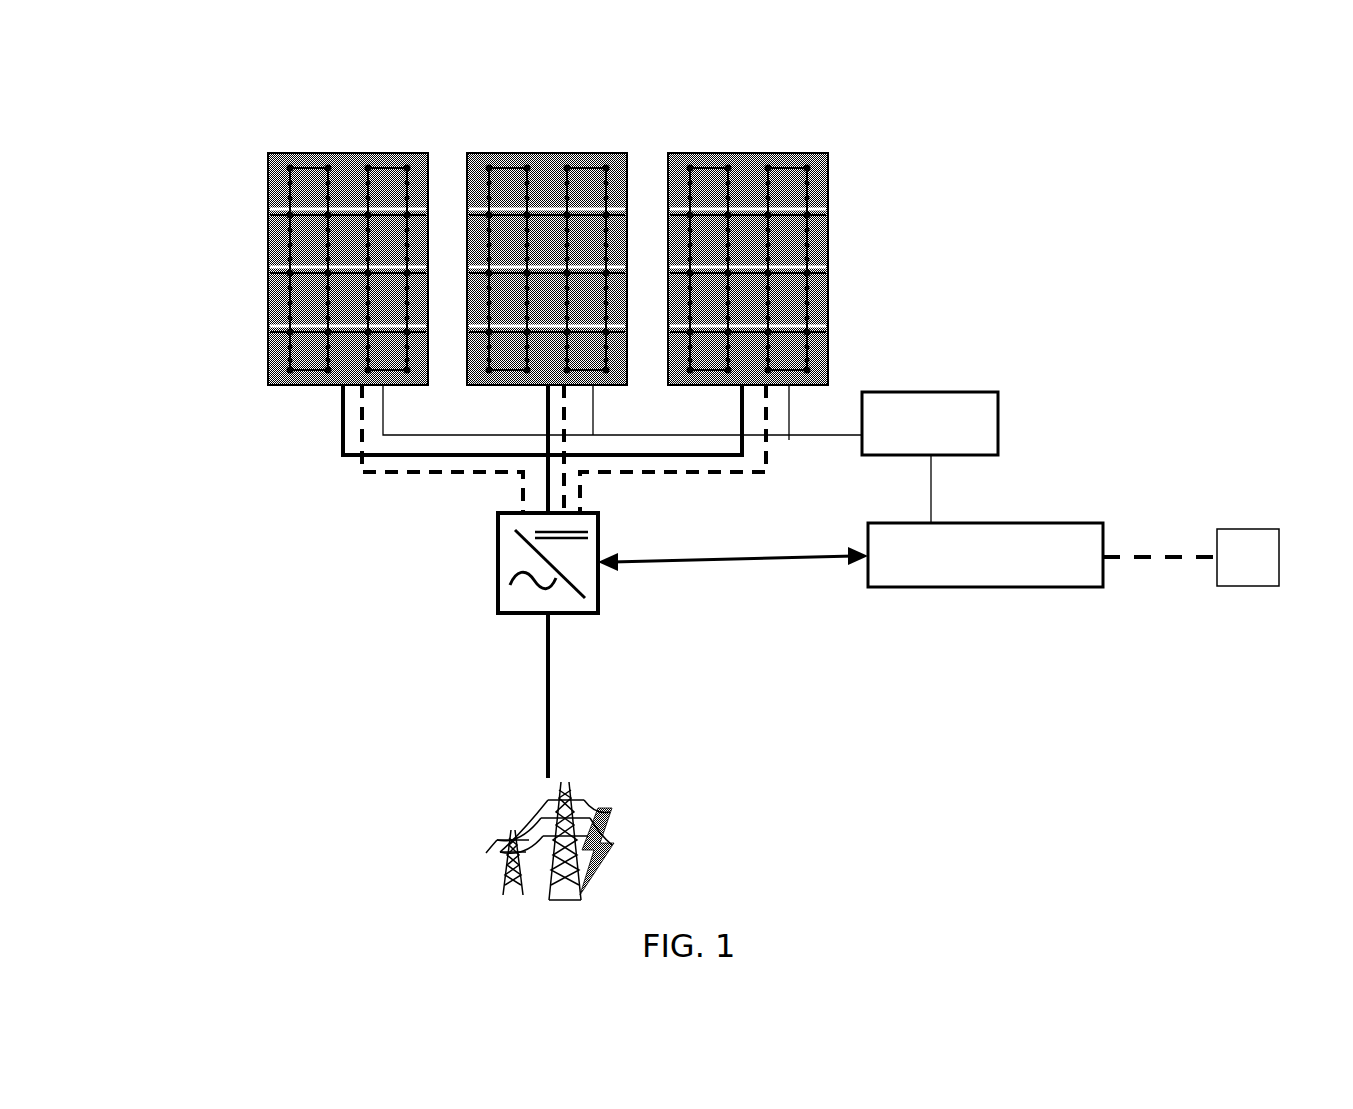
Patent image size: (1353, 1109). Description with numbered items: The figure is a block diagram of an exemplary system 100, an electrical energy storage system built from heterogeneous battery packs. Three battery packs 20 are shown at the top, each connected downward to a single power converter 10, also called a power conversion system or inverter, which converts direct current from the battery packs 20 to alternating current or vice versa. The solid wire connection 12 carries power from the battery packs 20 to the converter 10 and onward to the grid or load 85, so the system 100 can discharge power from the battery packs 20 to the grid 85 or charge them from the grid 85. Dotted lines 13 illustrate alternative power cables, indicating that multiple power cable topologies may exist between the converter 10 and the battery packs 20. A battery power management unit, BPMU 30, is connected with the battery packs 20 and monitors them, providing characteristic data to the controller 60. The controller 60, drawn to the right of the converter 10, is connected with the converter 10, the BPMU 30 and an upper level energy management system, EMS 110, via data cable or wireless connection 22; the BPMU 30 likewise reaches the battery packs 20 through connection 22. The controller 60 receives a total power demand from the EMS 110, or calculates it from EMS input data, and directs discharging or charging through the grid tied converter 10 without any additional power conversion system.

The system 100 is at (146, 97).
The battery pack 20 is at (323, 152).
The wire connection 12 is at (341, 436).
The alternative power cables 13 is at (387, 473).
The data cable or wireless connection 22 is at (789, 412).
The power converter 10 is at (498, 598).
The battery power management unit 30 is at (974, 405).
The controller 60 is at (1098, 522).
The energy management system 110 is at (1250, 585).
The grid or load 85 is at (605, 793).